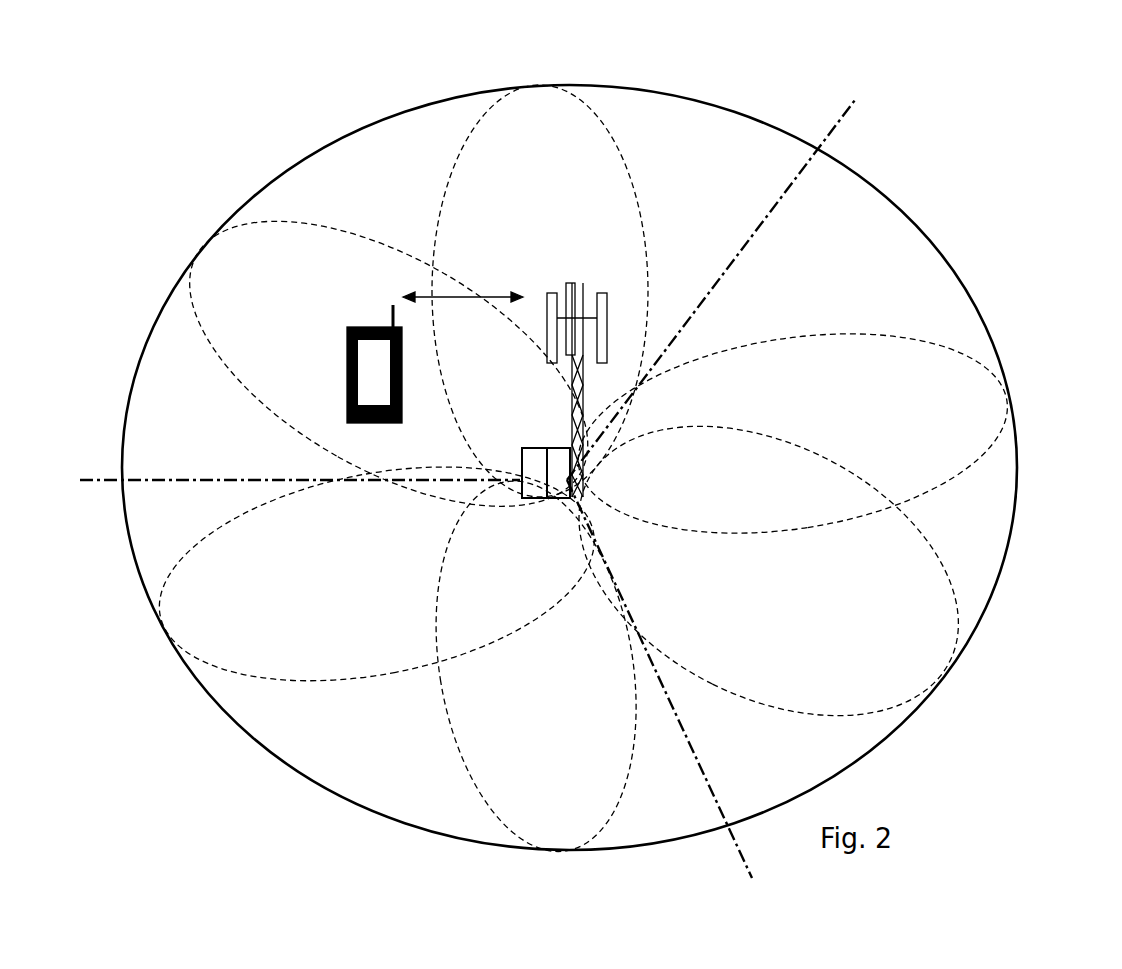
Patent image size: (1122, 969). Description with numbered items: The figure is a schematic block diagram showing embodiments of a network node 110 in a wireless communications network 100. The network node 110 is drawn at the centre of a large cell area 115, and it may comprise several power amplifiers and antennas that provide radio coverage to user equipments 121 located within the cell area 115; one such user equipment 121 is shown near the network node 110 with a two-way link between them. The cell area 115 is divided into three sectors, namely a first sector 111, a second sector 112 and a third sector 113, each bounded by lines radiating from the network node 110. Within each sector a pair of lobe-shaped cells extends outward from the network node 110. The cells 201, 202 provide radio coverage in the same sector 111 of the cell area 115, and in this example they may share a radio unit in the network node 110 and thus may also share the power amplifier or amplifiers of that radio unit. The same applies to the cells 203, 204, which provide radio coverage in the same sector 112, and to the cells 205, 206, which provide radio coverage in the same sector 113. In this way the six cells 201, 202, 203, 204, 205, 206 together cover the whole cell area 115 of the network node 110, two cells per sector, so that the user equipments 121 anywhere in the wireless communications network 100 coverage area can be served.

The wireless communications network 100 is at (938, 747).
The network node 110 is at (585, 390).
The sector 111 is at (385, 194).
The sector 112 is at (982, 526).
The sector 113 is at (375, 759).
The cell area 115 is at (995, 590).
The user equipment 121 is at (347, 343).
The cell 201 is at (278, 324).
The cell 202 is at (548, 190).
The cell 203 is at (925, 432).
The cell 204 is at (883, 652).
The cell 205 is at (588, 776).
The cell 206 is at (272, 616).